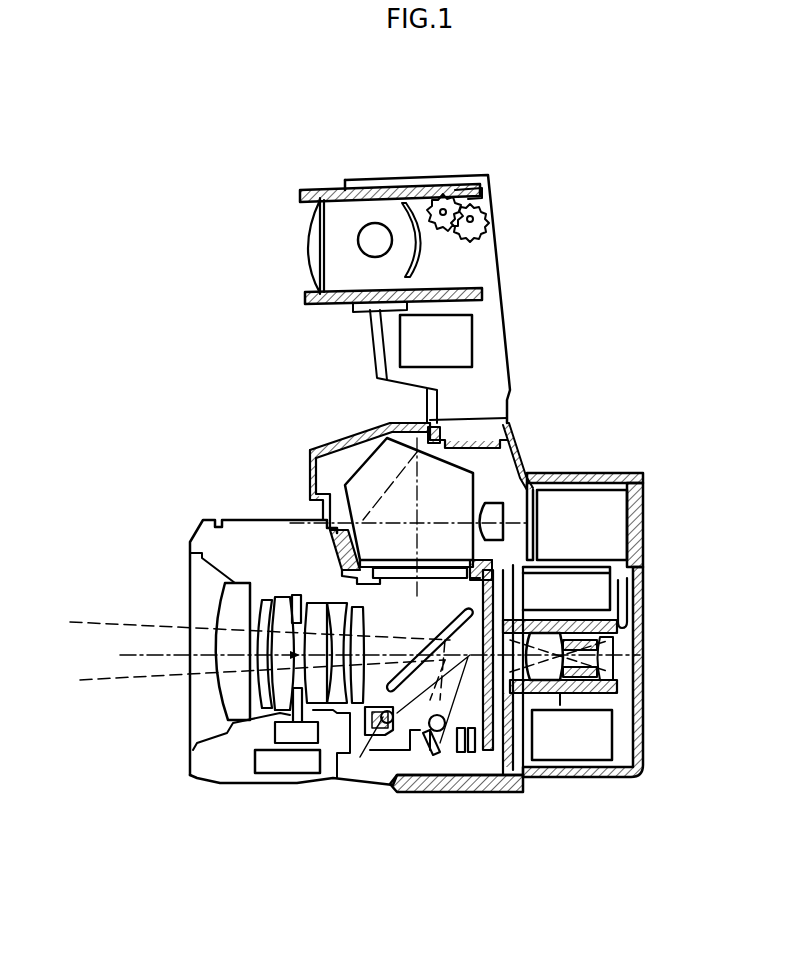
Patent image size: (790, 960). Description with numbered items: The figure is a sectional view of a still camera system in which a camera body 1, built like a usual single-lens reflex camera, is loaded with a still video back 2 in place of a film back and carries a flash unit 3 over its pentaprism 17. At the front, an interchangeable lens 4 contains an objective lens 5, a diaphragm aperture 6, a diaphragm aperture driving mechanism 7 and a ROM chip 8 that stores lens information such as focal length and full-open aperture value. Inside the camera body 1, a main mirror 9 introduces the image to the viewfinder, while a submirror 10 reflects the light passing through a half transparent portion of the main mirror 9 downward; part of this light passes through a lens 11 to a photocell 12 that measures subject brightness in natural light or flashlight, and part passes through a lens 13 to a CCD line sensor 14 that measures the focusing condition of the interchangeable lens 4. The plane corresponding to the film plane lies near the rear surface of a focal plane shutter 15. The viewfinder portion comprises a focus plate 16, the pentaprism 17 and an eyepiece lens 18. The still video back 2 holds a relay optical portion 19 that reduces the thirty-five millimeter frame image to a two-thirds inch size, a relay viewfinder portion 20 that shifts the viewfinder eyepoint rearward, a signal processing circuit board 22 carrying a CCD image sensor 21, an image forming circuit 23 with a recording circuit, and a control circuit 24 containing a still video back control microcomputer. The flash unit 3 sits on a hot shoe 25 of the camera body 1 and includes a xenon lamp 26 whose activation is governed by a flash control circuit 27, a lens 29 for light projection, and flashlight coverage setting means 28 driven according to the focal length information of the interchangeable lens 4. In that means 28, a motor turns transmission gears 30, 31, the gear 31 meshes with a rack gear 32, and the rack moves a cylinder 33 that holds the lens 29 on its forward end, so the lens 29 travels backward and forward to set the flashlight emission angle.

The camera body 1 is at (413, 805).
The still video back 2 is at (605, 460).
The flash unit 3 is at (508, 263).
The interchangeable lens 4 is at (244, 540).
The objective lens 5 is at (237, 677).
The diaphragm aperture 6 is at (197, 775).
The diaphragm aperture driving mechanism 7 is at (283, 732).
The ROM chip 8 is at (283, 766).
The main mirror 9 is at (390, 692).
The submirror 10 is at (490, 795).
The lens 11 is at (383, 760).
The photocell 12 is at (366, 735).
The lens 13 is at (440, 732).
The CCD line sensor 14 is at (460, 752).
The focal plane shutter 15 is at (482, 588).
The focus plate 16 is at (395, 572).
The pentaprism 17 is at (378, 457).
The eyepiece lens 18 is at (480, 500).
The relay optical portion 19 is at (605, 680).
The relay viewfinder portion 20 is at (615, 507).
The CCD image sensor 21 is at (615, 658).
The signal processing circuit board 22 is at (623, 618).
The image forming circuit 23 is at (598, 578).
The control circuit 24 is at (598, 750).
The hot shoe 25 is at (480, 446).
The xenon lamp 26 is at (376, 222).
The flash control circuit 27 is at (462, 340).
The flashlight coverage setting means 28 is at (467, 256).
The lens for light projection 29 is at (302, 240).
The transmission gear 30 is at (490, 218).
The transmission gear 31 is at (486, 198).
The rack gear 32 is at (456, 194).
The cylinder 33 is at (338, 186).